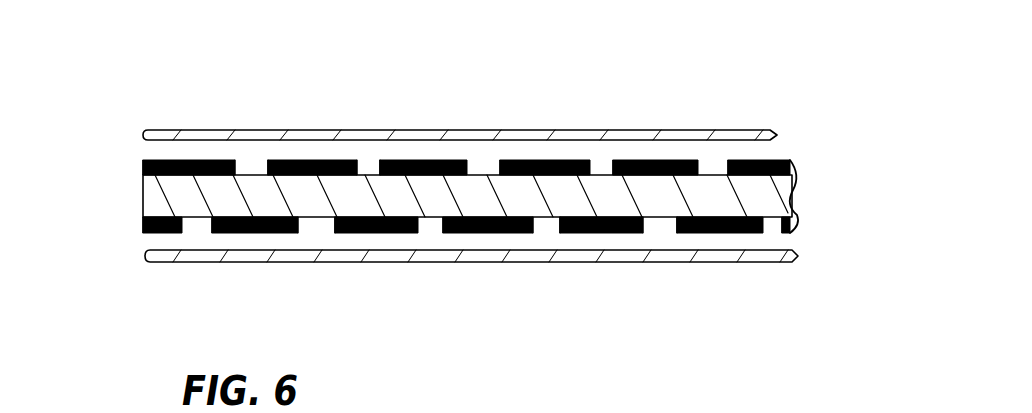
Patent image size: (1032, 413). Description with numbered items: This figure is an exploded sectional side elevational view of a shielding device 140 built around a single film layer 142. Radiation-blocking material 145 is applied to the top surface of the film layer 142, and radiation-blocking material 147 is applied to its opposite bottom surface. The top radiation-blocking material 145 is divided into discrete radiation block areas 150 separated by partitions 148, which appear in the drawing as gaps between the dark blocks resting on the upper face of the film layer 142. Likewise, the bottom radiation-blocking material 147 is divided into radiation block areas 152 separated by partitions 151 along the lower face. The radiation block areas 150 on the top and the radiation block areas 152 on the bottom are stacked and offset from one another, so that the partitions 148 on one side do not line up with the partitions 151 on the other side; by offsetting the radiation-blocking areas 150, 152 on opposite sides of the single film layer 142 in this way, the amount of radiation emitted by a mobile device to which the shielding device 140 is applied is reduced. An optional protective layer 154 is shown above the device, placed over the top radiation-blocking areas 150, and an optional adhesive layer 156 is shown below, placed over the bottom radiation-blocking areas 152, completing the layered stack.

The shielding device 140 is at (728, 54).
The film layer 142 is at (136, 197).
The radiation-blocking material 145 is at (808, 164).
The radiation-blocking material 147 is at (805, 229).
The partitions 148 is at (362, 165).
The radiation block areas 150 is at (450, 160).
The partitions 151 is at (315, 229).
The radiation block areas 152 is at (498, 234).
The protective layer 154 is at (180, 130).
The adhesive layer 156 is at (145, 255).